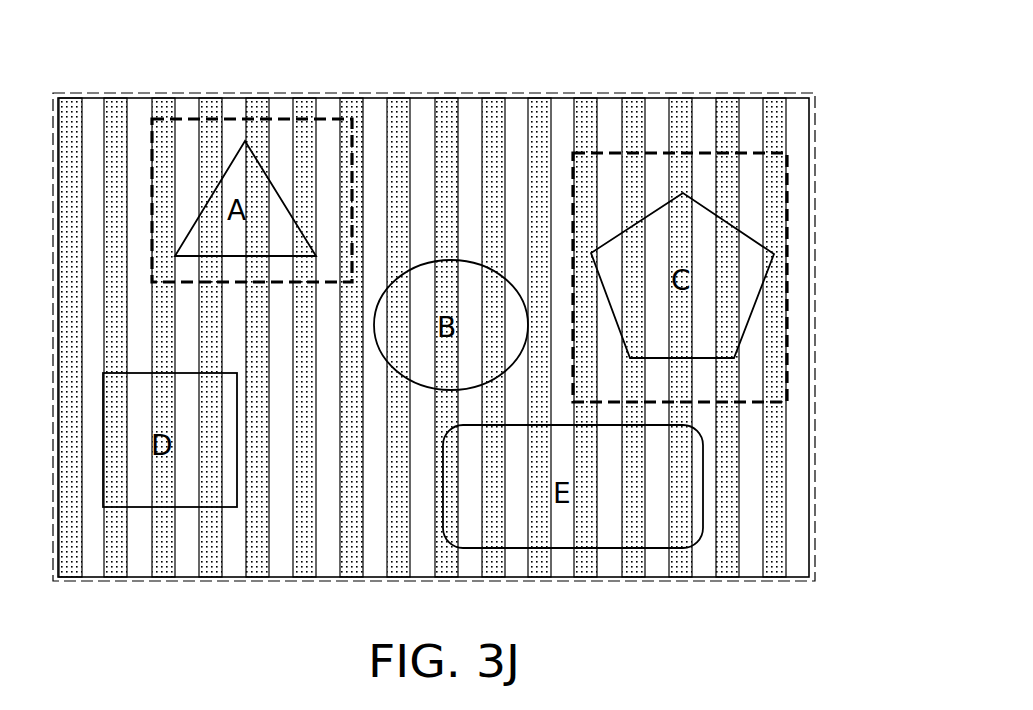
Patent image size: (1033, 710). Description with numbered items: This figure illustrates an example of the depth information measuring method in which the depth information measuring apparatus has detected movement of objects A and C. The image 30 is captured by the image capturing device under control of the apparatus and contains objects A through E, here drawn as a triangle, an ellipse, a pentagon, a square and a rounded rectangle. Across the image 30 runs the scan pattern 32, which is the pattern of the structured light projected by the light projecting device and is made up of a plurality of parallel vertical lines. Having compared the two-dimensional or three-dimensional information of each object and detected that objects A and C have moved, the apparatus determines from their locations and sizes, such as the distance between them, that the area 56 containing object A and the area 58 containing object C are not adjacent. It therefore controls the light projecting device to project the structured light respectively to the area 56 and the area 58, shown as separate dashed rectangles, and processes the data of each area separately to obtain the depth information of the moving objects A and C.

The image 30 is at (754, 96).
The scan pattern 32 is at (469, 94).
The area 56 is at (284, 117).
The area 58 is at (657, 151).